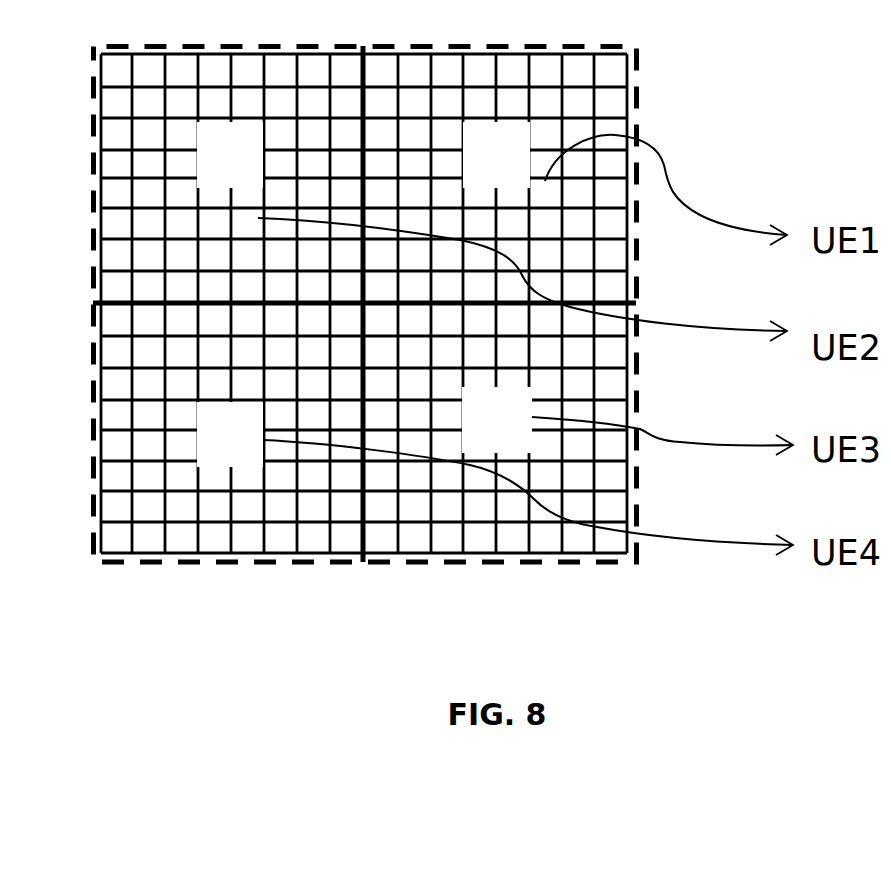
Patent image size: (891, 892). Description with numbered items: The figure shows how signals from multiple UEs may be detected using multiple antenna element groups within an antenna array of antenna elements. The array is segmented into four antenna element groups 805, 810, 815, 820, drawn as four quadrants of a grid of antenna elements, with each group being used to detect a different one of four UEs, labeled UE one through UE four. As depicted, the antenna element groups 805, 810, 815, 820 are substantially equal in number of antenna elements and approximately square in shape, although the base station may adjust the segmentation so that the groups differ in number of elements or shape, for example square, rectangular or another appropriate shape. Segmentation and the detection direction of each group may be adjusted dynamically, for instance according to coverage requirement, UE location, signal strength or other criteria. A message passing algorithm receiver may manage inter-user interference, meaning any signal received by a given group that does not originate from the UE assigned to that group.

The antenna element group 805 is at (232, 178).
The antenna element group 810 is at (495, 178).
The antenna element group 815 is at (232, 428).
The antenna element group 820 is at (495, 428).